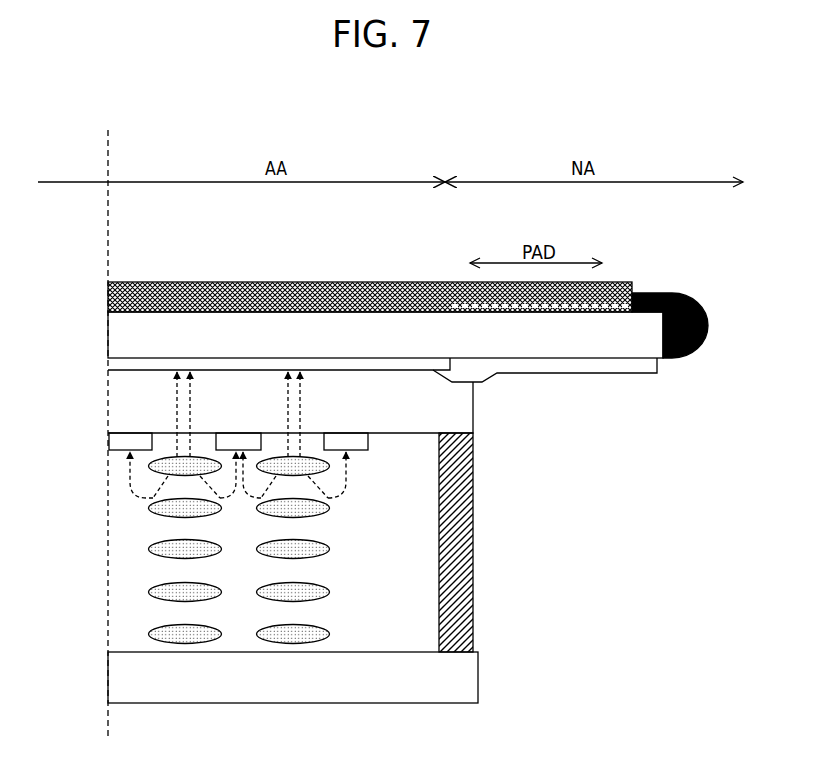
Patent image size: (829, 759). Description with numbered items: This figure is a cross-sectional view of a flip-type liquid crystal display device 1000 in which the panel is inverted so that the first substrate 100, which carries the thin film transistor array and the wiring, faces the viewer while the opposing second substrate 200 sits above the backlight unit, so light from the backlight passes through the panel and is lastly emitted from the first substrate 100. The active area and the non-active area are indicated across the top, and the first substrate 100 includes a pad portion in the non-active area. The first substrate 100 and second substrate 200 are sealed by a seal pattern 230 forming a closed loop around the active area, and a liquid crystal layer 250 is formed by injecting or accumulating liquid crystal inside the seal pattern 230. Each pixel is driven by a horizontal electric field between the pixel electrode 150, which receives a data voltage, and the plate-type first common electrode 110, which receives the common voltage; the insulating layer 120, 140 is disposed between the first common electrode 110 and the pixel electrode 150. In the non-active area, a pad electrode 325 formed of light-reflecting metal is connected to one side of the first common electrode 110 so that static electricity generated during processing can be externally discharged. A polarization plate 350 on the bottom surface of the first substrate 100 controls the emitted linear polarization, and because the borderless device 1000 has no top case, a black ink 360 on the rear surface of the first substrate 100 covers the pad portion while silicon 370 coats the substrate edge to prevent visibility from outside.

The liquid crystal display device 1000 is at (113, 93).
The polarization plate 350 is at (108, 298).
The black ink 360 is at (623, 282).
The silicon 370 is at (667, 293).
The first substrate 100 is at (118, 338).
The first common electrode 110 is at (118, 363).
The pad electrode 325 is at (549, 373).
The insulating layer 120 is at (250, 407).
The insulating layer 140 is at (118, 408).
The pixel electrode 150 is at (119, 442).
The liquid crystal layer 250 is at (130, 505).
The seal pattern 230 is at (474, 546).
The second substrate 200 is at (118, 666).